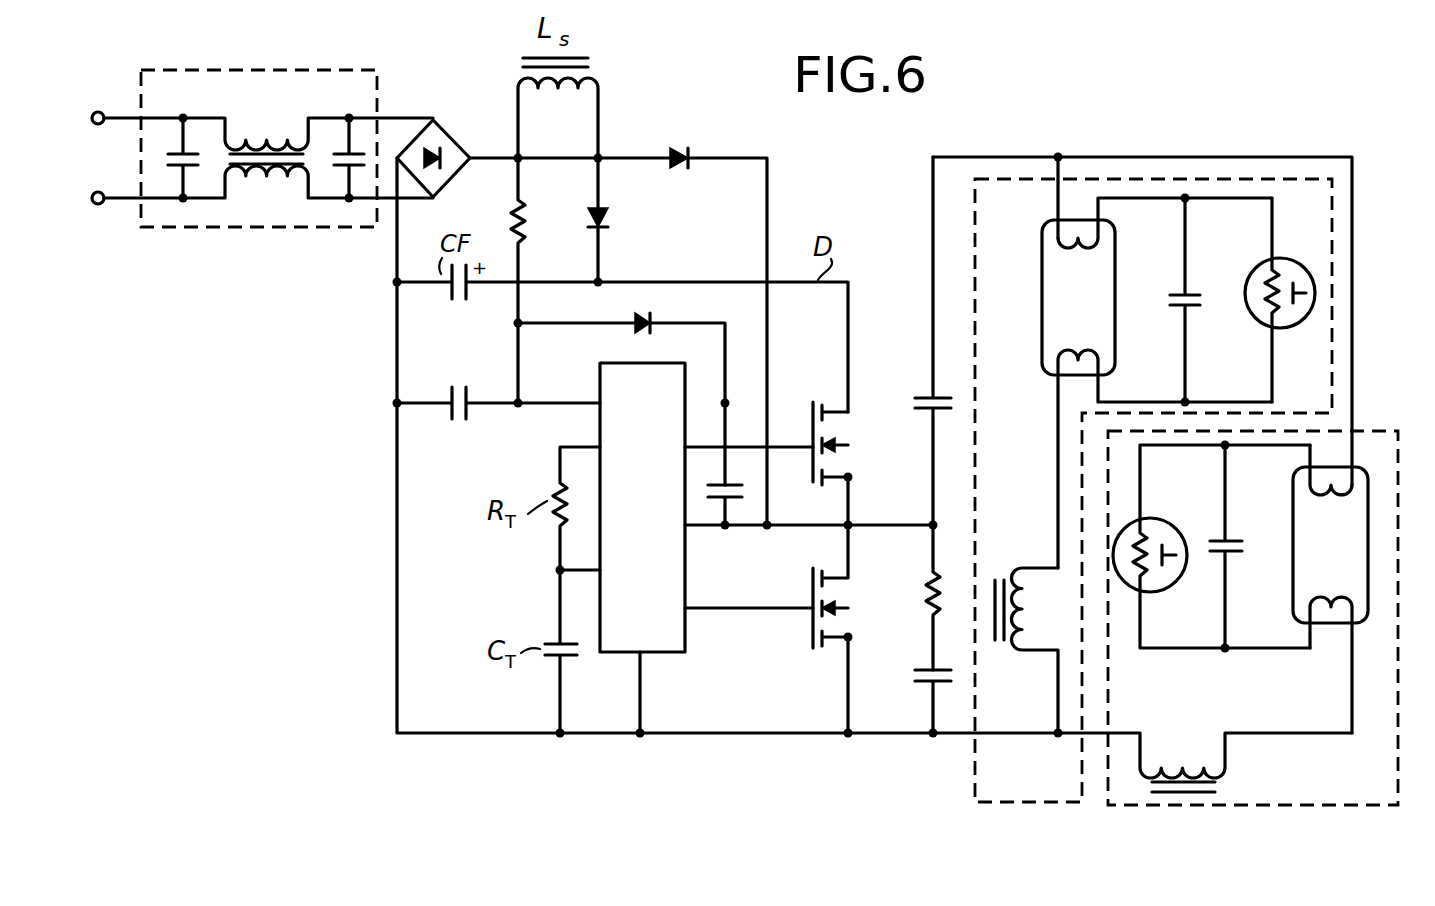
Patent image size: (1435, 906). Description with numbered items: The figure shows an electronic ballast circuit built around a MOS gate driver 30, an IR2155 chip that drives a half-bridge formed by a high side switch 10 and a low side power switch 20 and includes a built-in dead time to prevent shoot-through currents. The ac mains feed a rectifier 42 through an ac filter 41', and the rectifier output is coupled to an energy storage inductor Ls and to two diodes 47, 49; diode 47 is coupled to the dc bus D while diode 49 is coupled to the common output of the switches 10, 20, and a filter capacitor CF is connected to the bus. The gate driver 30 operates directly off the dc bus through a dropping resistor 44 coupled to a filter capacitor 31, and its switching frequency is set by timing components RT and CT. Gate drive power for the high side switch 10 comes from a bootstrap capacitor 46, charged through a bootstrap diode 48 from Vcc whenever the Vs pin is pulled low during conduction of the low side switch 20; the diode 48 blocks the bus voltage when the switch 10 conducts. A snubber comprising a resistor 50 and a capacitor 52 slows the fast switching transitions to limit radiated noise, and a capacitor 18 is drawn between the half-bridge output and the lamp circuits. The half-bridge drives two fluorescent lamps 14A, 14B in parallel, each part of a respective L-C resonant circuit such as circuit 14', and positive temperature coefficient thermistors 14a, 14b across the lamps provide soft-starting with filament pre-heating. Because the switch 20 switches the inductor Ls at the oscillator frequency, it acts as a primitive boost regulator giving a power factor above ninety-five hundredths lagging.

The high side switch 10 is at (858, 434).
The L-C resonant circuit 14' is at (1153, 458).
The fluorescent lamp 14A is at (1117, 288).
The fluorescent lamp 14B is at (1294, 549).
The positive temperature coefficient thermistor 14a is at (1244, 300).
The positive temperature coefficient thermistor 14b is at (1183, 506).
The DC blocking capacitor 18 is at (918, 401).
The low side power switch 20 is at (852, 593).
The MOS gate driver 30 is at (686, 649).
The filter capacitor 31 is at (457, 411).
The ac filter 41' is at (262, 178).
The rectifier 42 is at (465, 115).
The dropping resistor 44 is at (533, 222).
The bootstrap capacitor 46 is at (746, 498).
The diode 47 is at (610, 216).
The bootstrap diode 48 is at (628, 318).
The diode 49 is at (706, 127).
The resistor 50 is at (929, 591).
The capacitor 52 is at (911, 674).